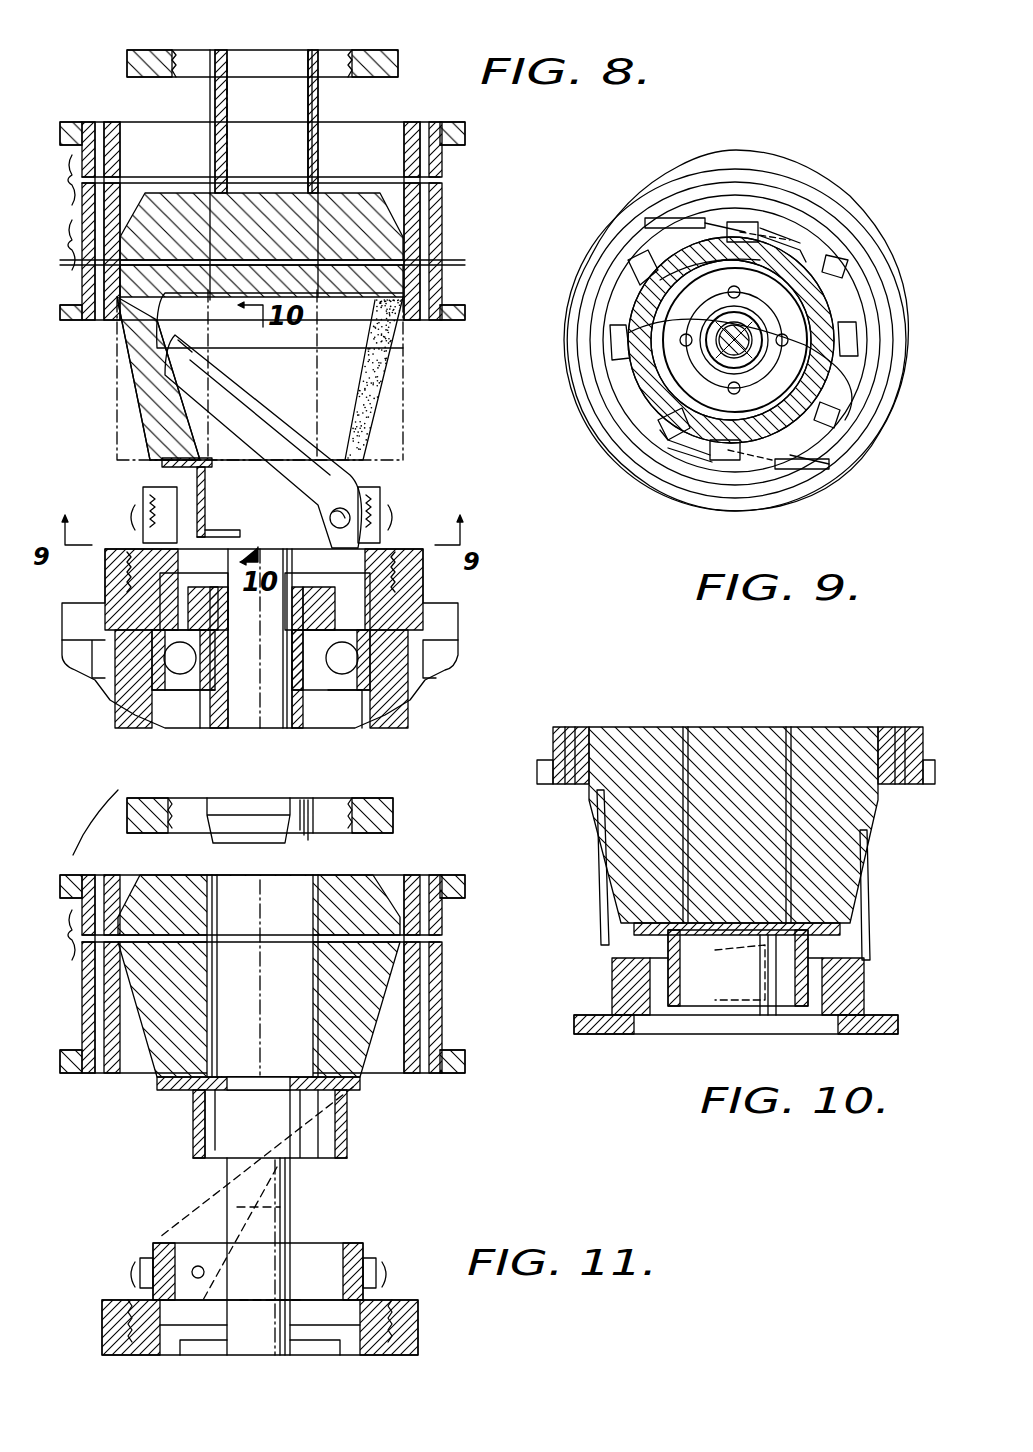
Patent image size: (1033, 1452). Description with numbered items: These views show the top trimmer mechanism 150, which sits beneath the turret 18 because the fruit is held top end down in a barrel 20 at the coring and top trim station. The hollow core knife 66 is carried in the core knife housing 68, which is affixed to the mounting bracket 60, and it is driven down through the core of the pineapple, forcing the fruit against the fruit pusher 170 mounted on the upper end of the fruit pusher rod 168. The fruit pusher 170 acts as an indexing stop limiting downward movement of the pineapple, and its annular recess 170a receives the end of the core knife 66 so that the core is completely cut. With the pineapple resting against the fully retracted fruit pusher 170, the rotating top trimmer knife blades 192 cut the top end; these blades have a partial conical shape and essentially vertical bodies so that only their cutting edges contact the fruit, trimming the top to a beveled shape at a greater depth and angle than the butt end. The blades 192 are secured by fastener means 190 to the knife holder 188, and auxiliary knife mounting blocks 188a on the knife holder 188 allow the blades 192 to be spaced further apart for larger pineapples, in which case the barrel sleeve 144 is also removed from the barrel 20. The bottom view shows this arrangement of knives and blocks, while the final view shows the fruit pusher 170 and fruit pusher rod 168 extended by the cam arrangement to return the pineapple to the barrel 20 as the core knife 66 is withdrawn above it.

In FIG. 8, the turret 18 is at (443, 211).
In FIG. 8, the barrel 20 is at (425, 238).
In FIG. 11, the barrel 20 is at (420, 1000).
In FIG. 8, the mounting bracket 60 is at (398, 64).
In FIG. 8, the core knife 66 is at (268, 56).
In FIG. 10, the core knife 66 is at (790, 735).
In FIG. 11, the core knife 66 is at (298, 840).
In FIG. 8, the core knife housing 68 is at (338, 52).
In FIG. 8, the barrel sleeve 144 is at (410, 191).
In FIG. 9, the top trimmer mechanism 150 is at (560, 165).
In FIG. 8, the fruit pusher rod 168 is at (258, 705).
In FIG. 11, the fruit pusher rod 168 is at (292, 1228).
In FIG. 8, the fruit pusher 170 is at (372, 462).
In FIG. 9, the fruit pusher 170 is at (705, 375).
In FIG. 11, the fruit pusher 170 is at (362, 1083).
In FIG. 8, the annular recess 170a is at (168, 482).
In FIG. 9, the annular recess 170a is at (700, 392).
In FIG. 10, the annular recess 170a is at (693, 1006).
In FIG. 9, the knife holder 188 is at (640, 305).
In FIG. 9, the auxiliary knife mounting blocks 188a is at (640, 237).
In FIG. 9, the fastener means 190 is at (615, 340).
In FIG. 8, the top trimmer knife blades 192 is at (383, 487).
In FIG. 9, the top trimmer knife blades 192 is at (690, 235).
In FIG. 10, the top trimmer knife blades 192 is at (600, 918).
In FIG. 11, the top trimmer knife blades 192 is at (256, 1193).